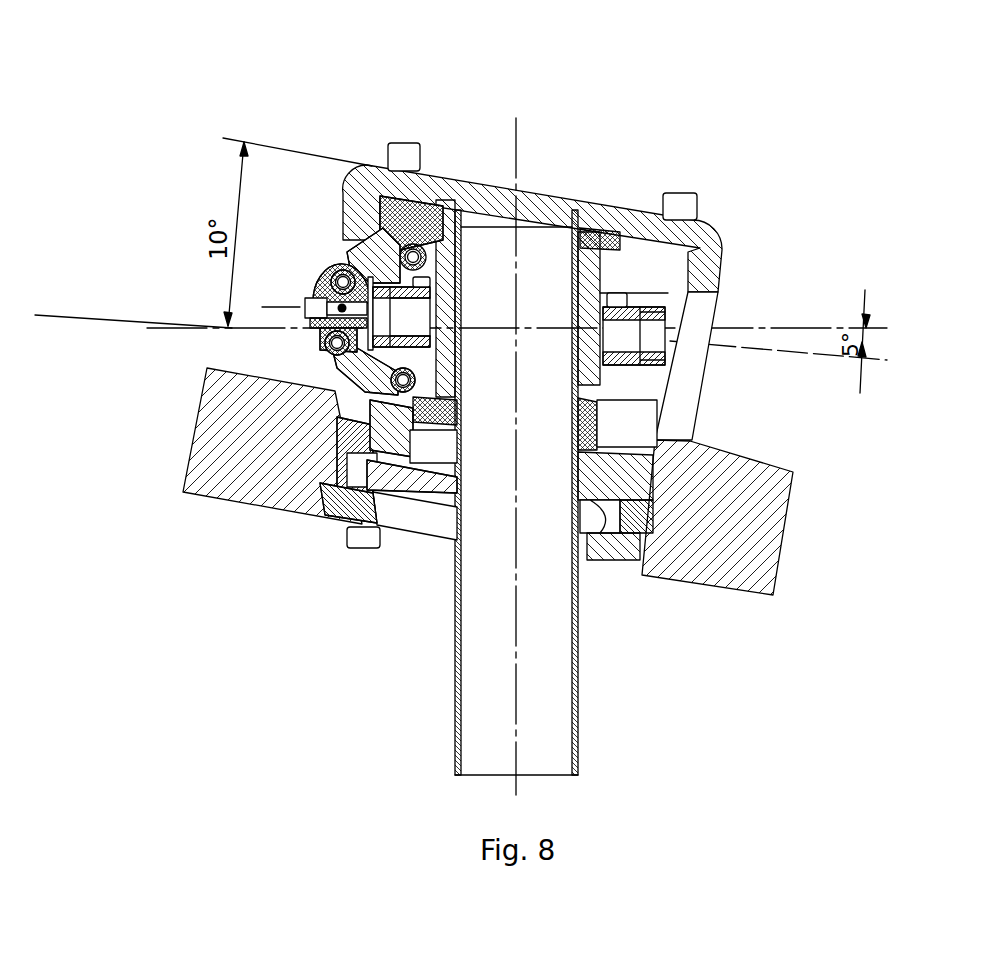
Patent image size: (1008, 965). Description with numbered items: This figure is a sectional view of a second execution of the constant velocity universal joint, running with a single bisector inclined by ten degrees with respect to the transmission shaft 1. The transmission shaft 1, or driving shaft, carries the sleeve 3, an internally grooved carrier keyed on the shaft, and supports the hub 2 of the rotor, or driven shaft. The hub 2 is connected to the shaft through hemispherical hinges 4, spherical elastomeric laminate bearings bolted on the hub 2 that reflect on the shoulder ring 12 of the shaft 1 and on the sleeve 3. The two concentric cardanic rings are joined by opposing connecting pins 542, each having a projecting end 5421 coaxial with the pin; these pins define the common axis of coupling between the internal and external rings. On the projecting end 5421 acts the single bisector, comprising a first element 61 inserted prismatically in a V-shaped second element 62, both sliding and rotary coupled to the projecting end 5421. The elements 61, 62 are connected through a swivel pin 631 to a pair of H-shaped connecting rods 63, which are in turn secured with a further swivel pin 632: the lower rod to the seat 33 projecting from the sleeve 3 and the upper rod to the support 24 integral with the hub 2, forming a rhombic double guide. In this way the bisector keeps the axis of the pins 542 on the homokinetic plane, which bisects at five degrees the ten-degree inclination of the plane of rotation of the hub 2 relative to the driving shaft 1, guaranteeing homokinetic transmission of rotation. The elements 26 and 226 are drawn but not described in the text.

The transmission shaft 1 is at (453, 713).
The hub 2 is at (257, 432).
The sleeve 3 is at (444, 302).
The hemispherical hinges 4 is at (590, 232).
The shoulder ring 12 is at (405, 470).
The support 24 is at (410, 228).
The base bar 26 is at (405, 507).
The seat 33 is at (345, 500).
The first element 61 is at (313, 333).
The second element 62 is at (310, 287).
The connecting rods 63 is at (355, 248).
The opening 226 is at (607, 262).
The connecting pins 542 is at (673, 367).
The swivel pin 631 is at (317, 343).
The swivel pin 632 is at (345, 490).
The projecting end 5421 is at (330, 275).